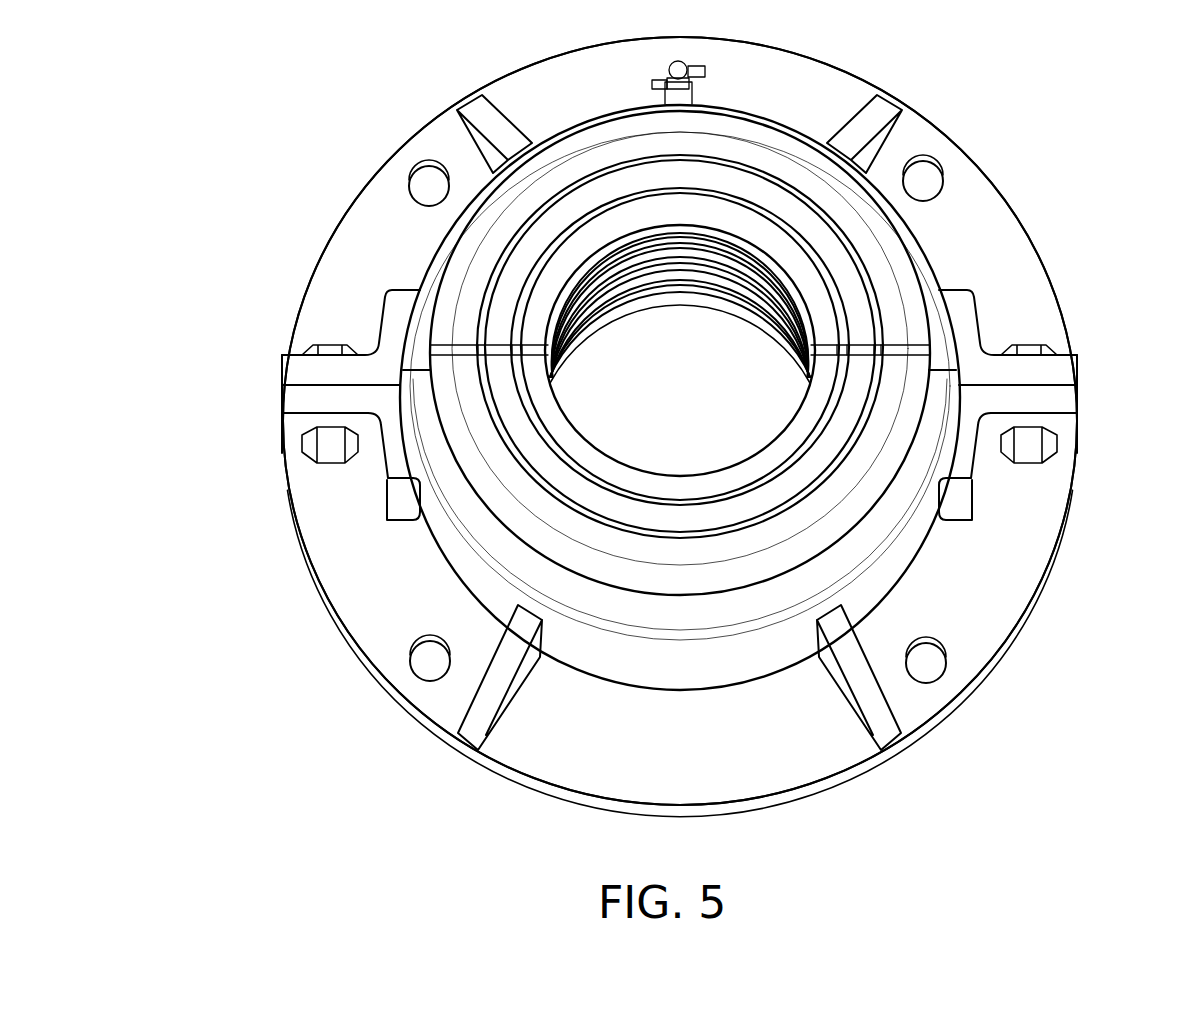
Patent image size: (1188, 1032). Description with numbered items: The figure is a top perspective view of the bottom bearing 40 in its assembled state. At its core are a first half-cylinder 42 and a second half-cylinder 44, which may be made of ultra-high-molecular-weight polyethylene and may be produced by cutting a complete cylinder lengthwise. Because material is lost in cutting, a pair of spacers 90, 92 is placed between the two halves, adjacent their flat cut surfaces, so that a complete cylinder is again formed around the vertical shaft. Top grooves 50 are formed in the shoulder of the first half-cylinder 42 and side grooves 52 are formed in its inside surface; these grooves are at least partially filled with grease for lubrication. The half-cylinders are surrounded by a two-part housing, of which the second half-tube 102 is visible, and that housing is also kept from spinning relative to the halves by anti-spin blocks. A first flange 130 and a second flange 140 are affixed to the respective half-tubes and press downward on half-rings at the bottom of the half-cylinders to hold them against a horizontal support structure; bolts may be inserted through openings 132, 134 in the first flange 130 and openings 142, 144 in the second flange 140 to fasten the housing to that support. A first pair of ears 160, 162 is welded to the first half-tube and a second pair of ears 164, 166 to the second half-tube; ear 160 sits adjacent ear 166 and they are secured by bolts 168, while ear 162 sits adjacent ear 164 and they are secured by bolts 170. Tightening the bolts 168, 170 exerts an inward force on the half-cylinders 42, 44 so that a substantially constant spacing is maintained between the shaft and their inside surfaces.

The bottom bearing 40 is at (190, 257).
The first half-cylinder 42 is at (756, 138).
The second half-cylinder 44 is at (503, 510).
The top grooves 50 is at (627, 200).
The side grooves 52 is at (726, 263).
The spacer 90 is at (895, 322).
The spacer 92 is at (503, 322).
The second half-tube 102 is at (683, 672).
The first flange 130 is at (363, 212).
The opening 132 is at (934, 155).
The opening 134 is at (424, 165).
The second flange 140 is at (803, 760).
The opening 142 is at (418, 654).
The opening 144 is at (934, 650).
The ear 160 is at (1050, 372).
The ear 162 is at (297, 370).
The ear 164 is at (388, 480).
The ear 166 is at (980, 474).
The bolts 168 is at (1030, 454).
The bolts 170 is at (320, 452).